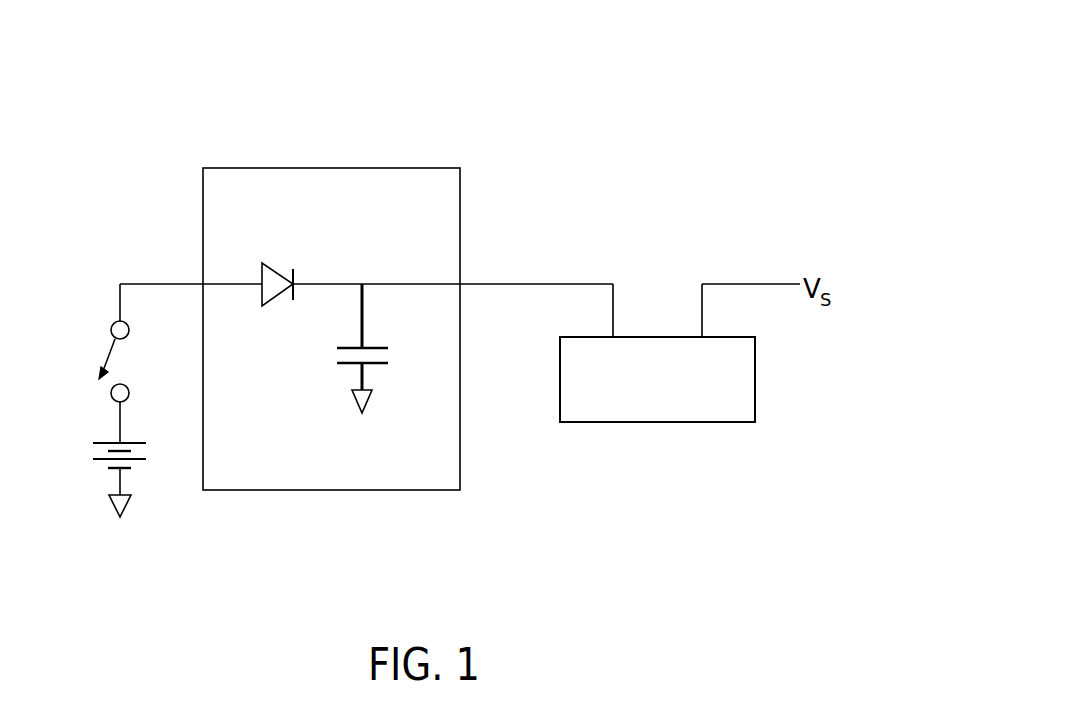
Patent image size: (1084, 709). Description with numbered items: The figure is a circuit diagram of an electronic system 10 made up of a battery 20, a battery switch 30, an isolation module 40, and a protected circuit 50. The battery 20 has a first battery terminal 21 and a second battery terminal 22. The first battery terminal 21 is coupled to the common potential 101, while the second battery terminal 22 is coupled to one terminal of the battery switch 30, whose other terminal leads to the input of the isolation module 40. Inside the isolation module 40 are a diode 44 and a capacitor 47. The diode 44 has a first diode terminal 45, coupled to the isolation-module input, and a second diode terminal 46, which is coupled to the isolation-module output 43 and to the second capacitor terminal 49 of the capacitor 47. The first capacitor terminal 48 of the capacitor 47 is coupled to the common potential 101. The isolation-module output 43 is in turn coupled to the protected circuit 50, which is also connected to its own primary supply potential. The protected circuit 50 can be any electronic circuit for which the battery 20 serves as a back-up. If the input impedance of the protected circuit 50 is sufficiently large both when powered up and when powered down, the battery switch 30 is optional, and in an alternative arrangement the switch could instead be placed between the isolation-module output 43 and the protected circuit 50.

The electronic system 10 is at (671, 76).
The battery 20 is at (117, 454).
The first battery terminal 21 is at (125, 468).
The second battery terminal 22 is at (116, 443).
The battery switch 30 is at (88, 342).
The isolation module 40 is at (328, 168).
The isolation-module output 43 is at (462, 282).
The diode 44 is at (275, 296).
The first diode terminal 45 is at (262, 280).
The second diode terminal 46 is at (294, 274).
The capacitor 47 is at (364, 348).
The first capacitor terminal 48 is at (372, 364).
The second capacitor terminal 49 is at (366, 347).
The protected circuit 50 is at (663, 423).
The common potential 101 is at (374, 398).